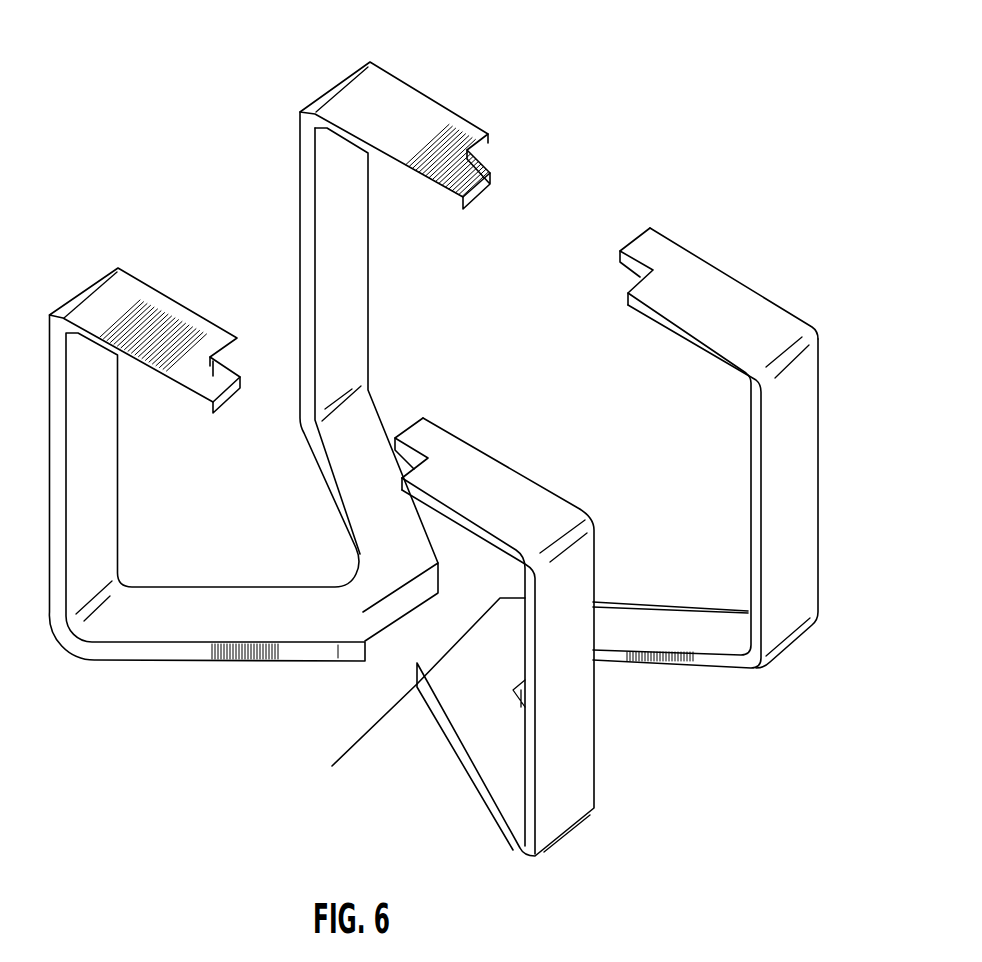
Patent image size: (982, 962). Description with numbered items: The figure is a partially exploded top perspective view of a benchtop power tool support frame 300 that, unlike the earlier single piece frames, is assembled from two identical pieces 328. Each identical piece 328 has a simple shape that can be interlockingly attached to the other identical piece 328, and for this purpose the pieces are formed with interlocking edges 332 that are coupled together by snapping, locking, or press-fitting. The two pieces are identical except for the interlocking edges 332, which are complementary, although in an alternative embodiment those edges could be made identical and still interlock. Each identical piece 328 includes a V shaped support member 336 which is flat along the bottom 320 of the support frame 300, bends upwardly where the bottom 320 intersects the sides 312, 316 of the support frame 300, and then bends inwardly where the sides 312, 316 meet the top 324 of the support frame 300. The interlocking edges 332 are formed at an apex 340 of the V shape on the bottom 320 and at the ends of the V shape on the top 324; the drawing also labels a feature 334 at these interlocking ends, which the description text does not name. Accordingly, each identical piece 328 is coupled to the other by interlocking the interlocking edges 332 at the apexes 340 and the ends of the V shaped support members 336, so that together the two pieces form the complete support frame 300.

The support frame 300 is at (75, 104).
The side 312 is at (214, 275).
The side 316 is at (836, 574).
The bottom 320 is at (659, 752).
The top 324 is at (681, 211).
The identical piece 328 is at (103, 703).
The interlocking edge 332 is at (620, 262).
The notch 334 is at (479, 160).
The V shaped support member 336 is at (197, 625).
The apex 340 is at (332, 764).